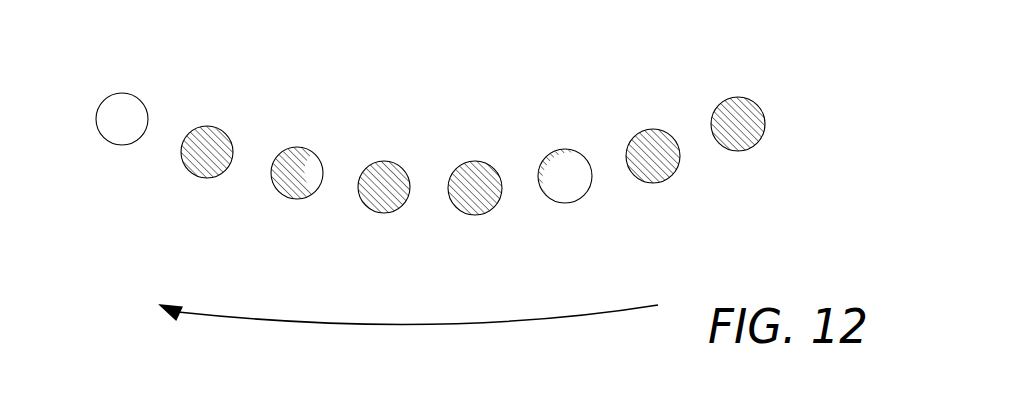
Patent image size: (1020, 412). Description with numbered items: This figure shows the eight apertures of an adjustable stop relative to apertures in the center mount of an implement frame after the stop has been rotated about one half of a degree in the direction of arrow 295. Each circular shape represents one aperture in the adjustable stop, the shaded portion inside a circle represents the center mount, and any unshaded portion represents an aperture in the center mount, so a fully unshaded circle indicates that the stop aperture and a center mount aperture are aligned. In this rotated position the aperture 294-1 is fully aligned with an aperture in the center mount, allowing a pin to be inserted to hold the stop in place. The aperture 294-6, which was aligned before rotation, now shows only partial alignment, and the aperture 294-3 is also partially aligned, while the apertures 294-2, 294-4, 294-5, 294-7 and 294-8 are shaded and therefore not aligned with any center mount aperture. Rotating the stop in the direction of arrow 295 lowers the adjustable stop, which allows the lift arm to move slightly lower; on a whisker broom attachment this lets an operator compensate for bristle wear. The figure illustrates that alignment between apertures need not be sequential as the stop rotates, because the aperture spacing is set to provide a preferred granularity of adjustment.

The aperture 294-1 is at (132, 93).
The aperture 294-2 is at (222, 175).
The aperture 294-3 is at (303, 147).
The aperture 294-4 is at (395, 212).
The aperture 294-5 is at (482, 162).
The aperture 294-6 is at (578, 193).
The aperture 294-7 is at (658, 130).
The aperture 294-8 is at (747, 145).
The arrow 295 is at (435, 323).